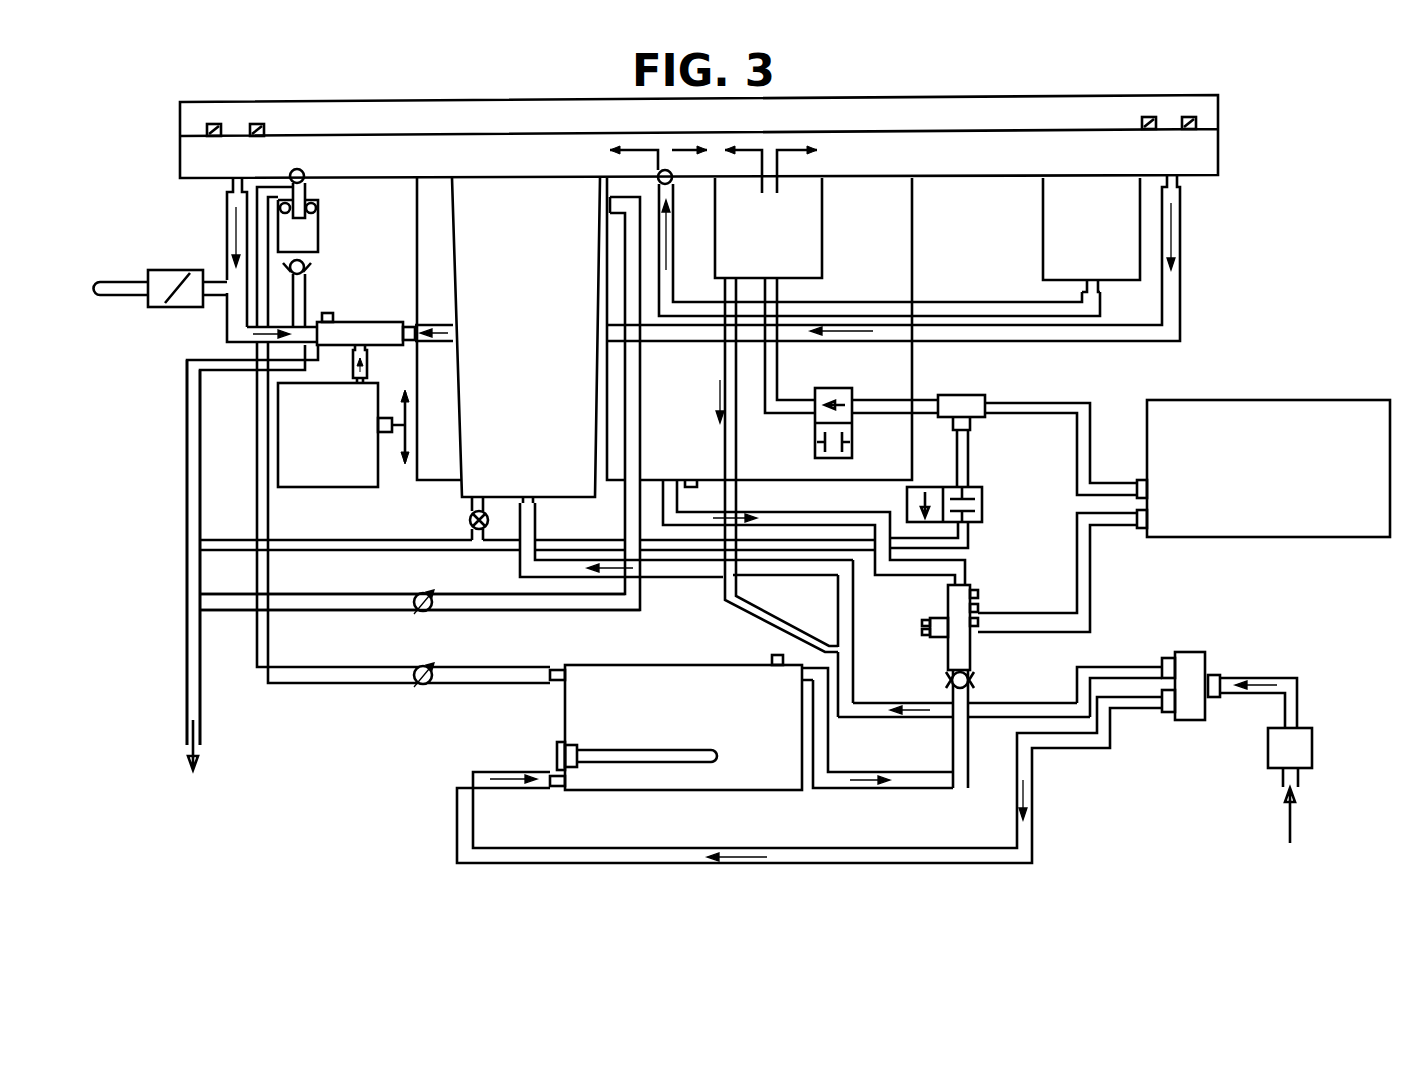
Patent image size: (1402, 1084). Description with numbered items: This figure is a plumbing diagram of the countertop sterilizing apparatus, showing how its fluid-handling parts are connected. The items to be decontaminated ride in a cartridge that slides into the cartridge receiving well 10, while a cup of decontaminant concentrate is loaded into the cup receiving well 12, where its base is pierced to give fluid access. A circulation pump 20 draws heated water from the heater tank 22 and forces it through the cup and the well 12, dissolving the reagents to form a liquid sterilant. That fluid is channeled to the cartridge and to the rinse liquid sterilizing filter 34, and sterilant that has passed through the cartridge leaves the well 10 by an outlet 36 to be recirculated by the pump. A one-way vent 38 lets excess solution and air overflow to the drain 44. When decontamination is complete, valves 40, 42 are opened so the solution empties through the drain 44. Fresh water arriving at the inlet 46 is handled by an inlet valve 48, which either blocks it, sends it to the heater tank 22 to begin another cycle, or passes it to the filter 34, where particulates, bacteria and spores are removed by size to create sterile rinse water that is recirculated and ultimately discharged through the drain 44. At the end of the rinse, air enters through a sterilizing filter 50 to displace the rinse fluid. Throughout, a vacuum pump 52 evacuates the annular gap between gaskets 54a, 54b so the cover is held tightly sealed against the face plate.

The decontamination cartridge receiving well 10 is at (913, 238).
The cup receiving well 12 is at (822, 217).
The circulation pump 20 is at (1208, 400).
The heater tank 22 is at (775, 732).
The rinse liquid sterilizing filter 34 is at (530, 302).
The outlet 36 is at (655, 485).
The one-way vent 38 is at (306, 172).
The valve 40 is at (468, 518).
The valve 42 is at (983, 488).
The drain 44 is at (200, 712).
The inlet 46 is at (1302, 782).
The inlet valve 48 is at (1190, 652).
The sterilizing filter 50 is at (1103, 250).
The vacuum pump 52 is at (312, 488).
The gasket 54a is at (1188, 119).
The gasket 54b is at (1148, 119).